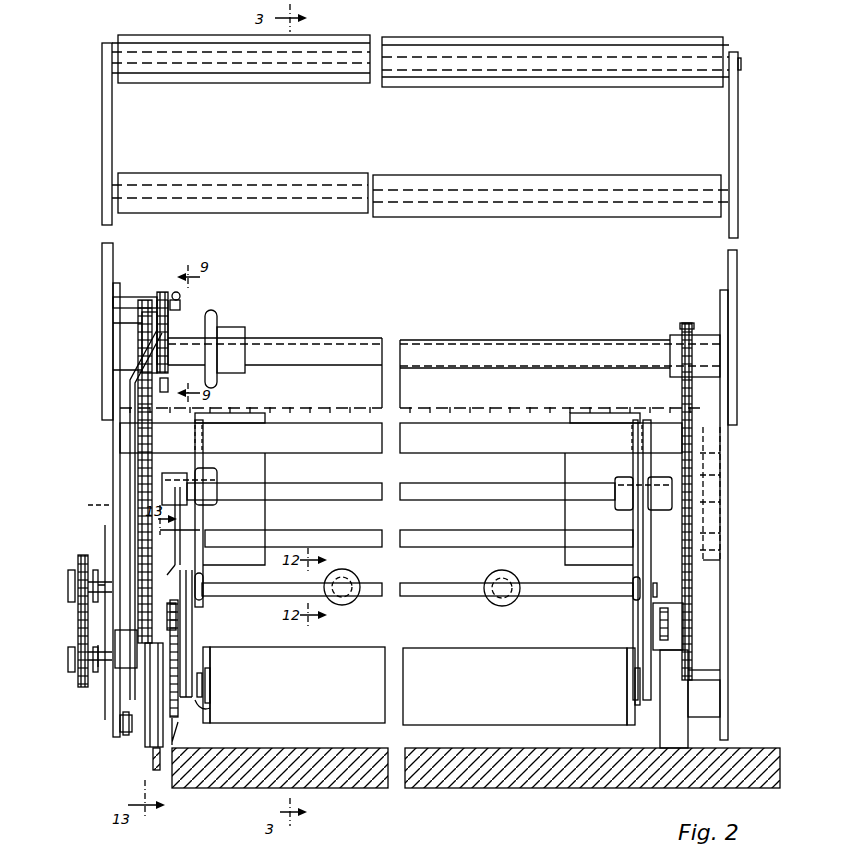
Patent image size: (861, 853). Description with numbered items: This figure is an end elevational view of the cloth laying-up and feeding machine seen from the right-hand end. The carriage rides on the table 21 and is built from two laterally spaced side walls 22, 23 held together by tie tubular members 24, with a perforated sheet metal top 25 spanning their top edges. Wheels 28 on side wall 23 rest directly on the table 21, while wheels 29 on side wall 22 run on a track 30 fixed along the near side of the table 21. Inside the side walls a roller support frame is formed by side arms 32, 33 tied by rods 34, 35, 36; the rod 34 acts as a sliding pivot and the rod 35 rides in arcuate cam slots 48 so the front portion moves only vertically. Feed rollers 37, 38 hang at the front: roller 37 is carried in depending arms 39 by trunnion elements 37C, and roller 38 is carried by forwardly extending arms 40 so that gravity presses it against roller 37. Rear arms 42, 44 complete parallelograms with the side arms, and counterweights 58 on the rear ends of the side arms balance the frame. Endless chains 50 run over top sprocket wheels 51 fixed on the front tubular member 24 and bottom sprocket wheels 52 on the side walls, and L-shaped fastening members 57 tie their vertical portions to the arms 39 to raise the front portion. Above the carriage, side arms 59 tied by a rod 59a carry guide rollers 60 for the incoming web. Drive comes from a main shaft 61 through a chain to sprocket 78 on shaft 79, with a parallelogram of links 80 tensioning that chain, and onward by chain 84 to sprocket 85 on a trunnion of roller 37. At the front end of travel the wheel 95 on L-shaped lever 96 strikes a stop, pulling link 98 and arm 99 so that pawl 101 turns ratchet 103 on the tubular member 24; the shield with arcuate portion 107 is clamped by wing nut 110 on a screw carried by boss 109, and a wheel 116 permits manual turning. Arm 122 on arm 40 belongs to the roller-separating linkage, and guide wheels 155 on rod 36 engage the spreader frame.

The table 21 is at (546, 782).
The side wall 22 is at (112, 437).
The side wall 23 is at (736, 452).
The tubular member 24 is at (300, 346).
The perforated sheet metal top 25 is at (482, 408).
The wheels 28 is at (660, 738).
The wheels 29 is at (146, 745).
The track 30 is at (152, 760).
The side arm 32 is at (204, 521).
The side arm 33 is at (630, 520).
The rod 34 is at (474, 490).
The rod 35 is at (470, 540).
The rod 36 is at (460, 590).
The feed roller 37 is at (552, 712).
The trunnion element 37C is at (210, 683).
The feed roller 38 is at (500, 716).
The arm 39 is at (192, 630).
The arm 40 is at (200, 641).
The rear arm 42 is at (180, 559).
The rear arm 44 is at (650, 572).
The cam slot 48 is at (738, 518).
The endless chain 50 is at (140, 443).
The top sprocket wheel 51 is at (682, 328).
The bottom sprocket wheel 52 is at (690, 672).
The L-shaped fastening member 57 is at (178, 618).
The counterweight 58 is at (265, 470).
The side arm 59 is at (100, 140).
The rod 59a is at (556, 60).
The roller 60 is at (493, 46).
The main shaft 61 is at (106, 664).
The sprocket 78 is at (84, 610).
The shaft 79 is at (105, 560).
The parallelogram of links 80 is at (76, 580).
The chain 84 is at (180, 657).
The sprocket 85 is at (176, 725).
The wheel 95 is at (125, 733).
The L-shaped lever 96 is at (140, 697).
The link 98 is at (140, 358).
The arm 99 is at (158, 298).
The pawl 101 is at (167, 386).
The ratchet 103 is at (161, 292).
The arcuate portion 107 is at (167, 290).
The boss portion 109 is at (118, 297).
The wing nut 110 is at (180, 296).
The wheel 116 is at (213, 322).
The arm 122 is at (208, 705).
The guide wheel 155 is at (352, 578).